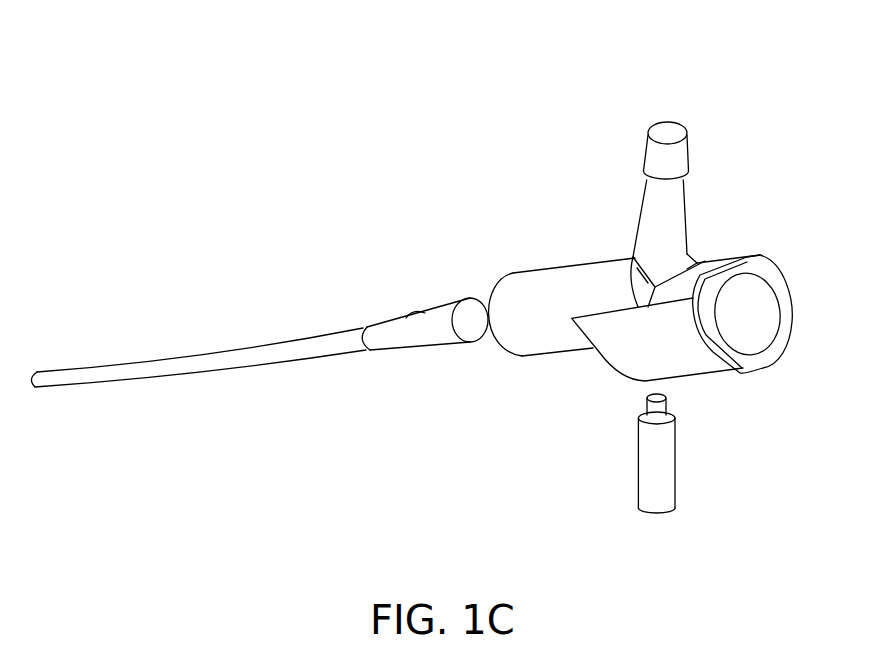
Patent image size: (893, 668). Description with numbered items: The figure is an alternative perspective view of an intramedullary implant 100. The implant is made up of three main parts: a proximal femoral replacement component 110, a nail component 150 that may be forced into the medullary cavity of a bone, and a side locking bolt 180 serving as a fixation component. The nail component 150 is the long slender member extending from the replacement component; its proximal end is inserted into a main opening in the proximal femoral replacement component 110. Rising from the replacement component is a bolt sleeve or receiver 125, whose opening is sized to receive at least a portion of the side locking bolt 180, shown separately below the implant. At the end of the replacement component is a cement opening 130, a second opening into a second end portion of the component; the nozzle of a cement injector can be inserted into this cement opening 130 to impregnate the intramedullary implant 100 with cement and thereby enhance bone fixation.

The intramedullary implant 100 is at (96, 113).
The proximal femoral replacement component 110 is at (648, 90).
The bolt sleeve or receiver 125 is at (598, 175).
The cement opening 130 is at (757, 267).
The nail component 150 is at (224, 397).
The side locking bolt 180 is at (611, 466).